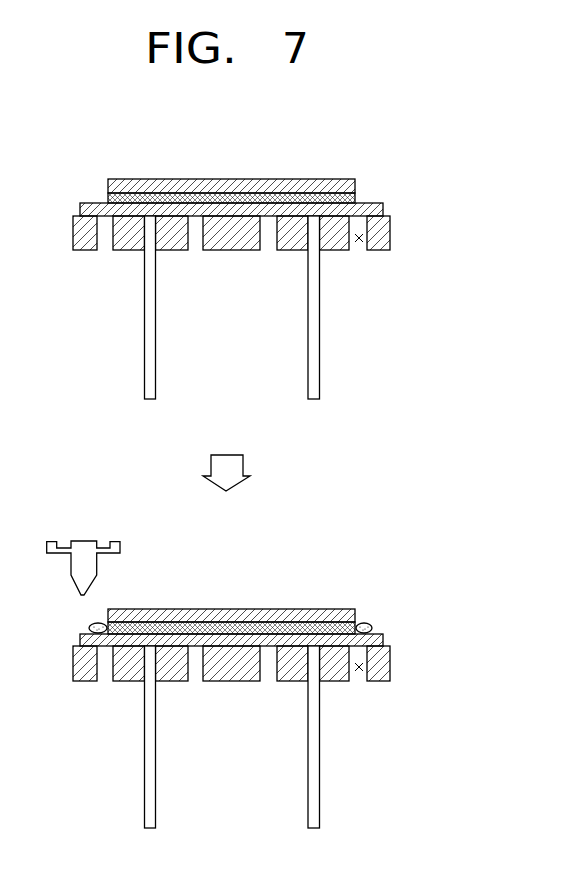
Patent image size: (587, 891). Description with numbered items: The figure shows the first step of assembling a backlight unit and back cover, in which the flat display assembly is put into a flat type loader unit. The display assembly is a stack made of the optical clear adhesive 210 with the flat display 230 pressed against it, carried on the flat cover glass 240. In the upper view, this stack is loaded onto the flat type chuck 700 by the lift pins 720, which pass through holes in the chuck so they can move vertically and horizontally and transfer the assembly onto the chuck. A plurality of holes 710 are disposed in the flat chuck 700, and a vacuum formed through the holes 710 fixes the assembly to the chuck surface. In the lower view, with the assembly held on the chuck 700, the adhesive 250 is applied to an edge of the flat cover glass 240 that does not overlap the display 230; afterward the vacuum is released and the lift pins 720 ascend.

The optical clear adhesive 210 is at (355, 199).
The flat display 230 is at (355, 187).
The flat cover glass 240 is at (383, 210).
The adhesive 250 is at (372, 626).
The flat type chuck 700 is at (383, 236).
The holes 710 is at (359, 244).
The lift pins 720 is at (319, 371).